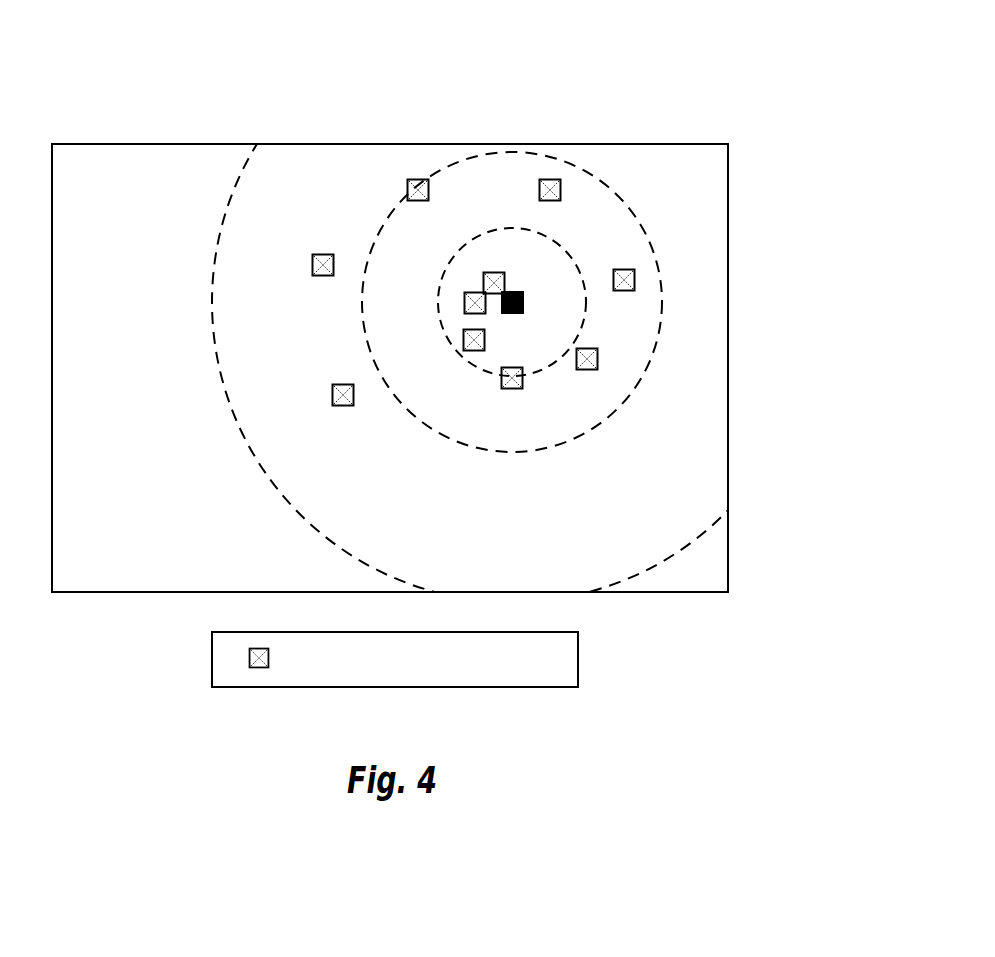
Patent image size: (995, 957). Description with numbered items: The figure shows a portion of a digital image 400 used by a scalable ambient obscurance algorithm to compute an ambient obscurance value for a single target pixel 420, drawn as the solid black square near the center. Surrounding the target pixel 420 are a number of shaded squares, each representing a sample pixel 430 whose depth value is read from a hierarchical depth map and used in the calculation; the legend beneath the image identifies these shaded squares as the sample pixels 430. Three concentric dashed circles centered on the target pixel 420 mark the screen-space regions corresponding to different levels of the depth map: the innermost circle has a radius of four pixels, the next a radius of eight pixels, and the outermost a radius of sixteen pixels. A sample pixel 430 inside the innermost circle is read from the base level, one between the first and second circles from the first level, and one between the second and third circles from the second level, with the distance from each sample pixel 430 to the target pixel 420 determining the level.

The digital image 400 is at (142, 143).
The target pixel 420 is at (523, 302).
The sample pixels 430 is at (405, 434).